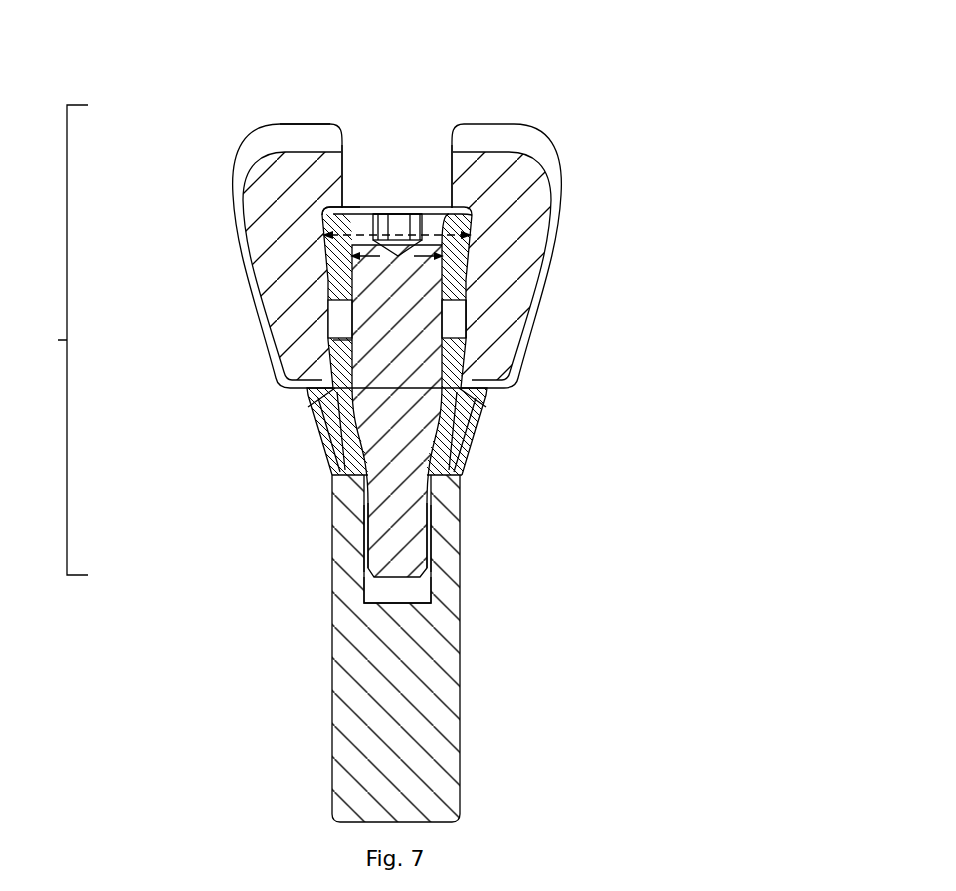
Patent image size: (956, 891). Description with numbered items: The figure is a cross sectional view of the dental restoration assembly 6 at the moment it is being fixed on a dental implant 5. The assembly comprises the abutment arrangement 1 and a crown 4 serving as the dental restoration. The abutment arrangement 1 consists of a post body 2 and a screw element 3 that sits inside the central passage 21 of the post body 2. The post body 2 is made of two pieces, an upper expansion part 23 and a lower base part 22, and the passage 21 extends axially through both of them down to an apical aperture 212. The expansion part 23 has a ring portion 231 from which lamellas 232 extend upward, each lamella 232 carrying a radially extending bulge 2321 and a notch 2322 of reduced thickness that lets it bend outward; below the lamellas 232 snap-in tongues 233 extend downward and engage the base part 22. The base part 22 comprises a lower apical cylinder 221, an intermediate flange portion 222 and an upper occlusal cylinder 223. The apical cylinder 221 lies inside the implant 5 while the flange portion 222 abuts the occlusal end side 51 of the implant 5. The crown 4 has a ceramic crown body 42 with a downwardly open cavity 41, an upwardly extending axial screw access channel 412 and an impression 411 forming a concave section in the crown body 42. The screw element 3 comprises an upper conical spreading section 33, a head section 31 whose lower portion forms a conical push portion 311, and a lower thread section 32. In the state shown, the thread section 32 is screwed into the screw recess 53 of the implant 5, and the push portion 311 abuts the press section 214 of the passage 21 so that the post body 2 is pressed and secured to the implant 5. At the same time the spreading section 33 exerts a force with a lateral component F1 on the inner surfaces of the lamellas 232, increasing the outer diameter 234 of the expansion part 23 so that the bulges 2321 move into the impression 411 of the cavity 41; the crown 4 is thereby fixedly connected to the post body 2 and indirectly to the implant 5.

The abutment arrangement 1 is at (304, 333).
The post body 2 is at (490, 377).
The screw element 3 is at (426, 190).
The crown 4 is at (210, 164).
The dental implant 5 is at (315, 728).
The dental restoration assembly 6 is at (54, 340).
The central passage 21 is at (352, 484).
The base part 22 is at (320, 418).
The expansion part 23 is at (310, 253).
The head section 31 is at (428, 367).
The thread section 32 is at (387, 543).
The spreading section 33 is at (442, 218).
The cavity 41 is at (370, 183).
The crown body 42 is at (532, 187).
The occlusal end side 51 is at (318, 403).
The screw recess 53 is at (420, 597).
The apical aperture 212 is at (440, 500).
The press section 214 is at (469, 445).
The apical cylinder 221 is at (340, 443).
The flange portion 222 is at (484, 397).
The occlusal cylinder 223 is at (340, 352).
The ring portion 231 is at (330, 290).
The lamella 232 is at (495, 243).
The snap-in tongue 233 is at (330, 313).
The outer diameter 234 is at (458, 253).
The push portion 311 is at (401, 218).
The impression 411 is at (472, 205).
The screw access channel 412 is at (365, 158).
The bulge 2321 is at (322, 236).
The notch 2322 is at (462, 268).
The lateral force component F1 is at (452, 302).